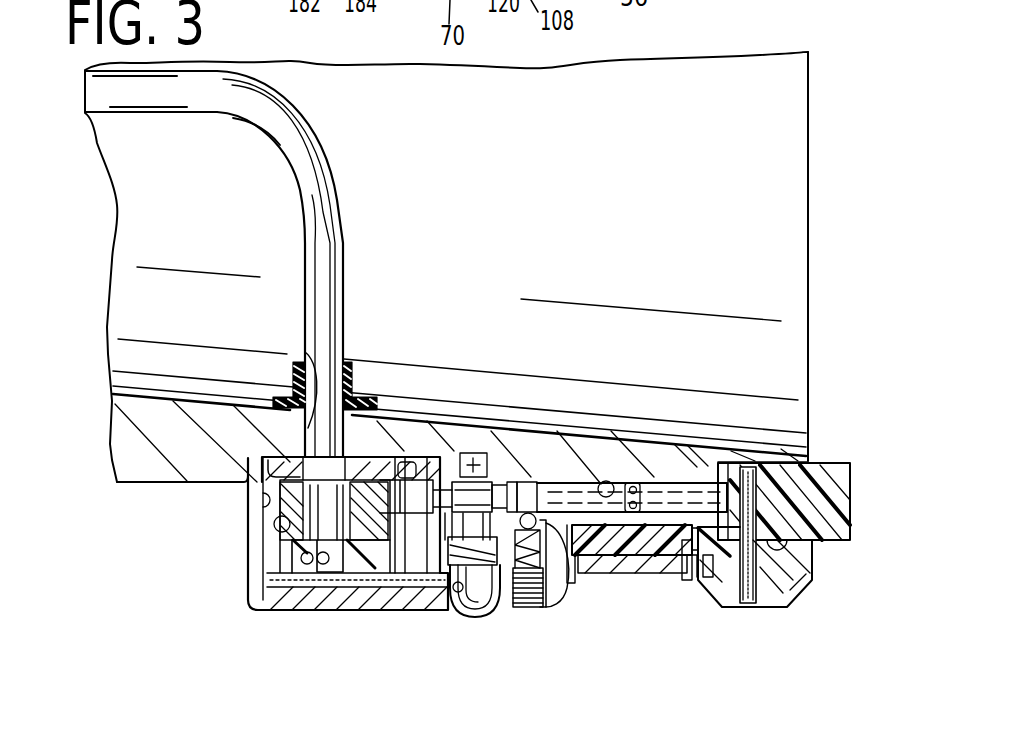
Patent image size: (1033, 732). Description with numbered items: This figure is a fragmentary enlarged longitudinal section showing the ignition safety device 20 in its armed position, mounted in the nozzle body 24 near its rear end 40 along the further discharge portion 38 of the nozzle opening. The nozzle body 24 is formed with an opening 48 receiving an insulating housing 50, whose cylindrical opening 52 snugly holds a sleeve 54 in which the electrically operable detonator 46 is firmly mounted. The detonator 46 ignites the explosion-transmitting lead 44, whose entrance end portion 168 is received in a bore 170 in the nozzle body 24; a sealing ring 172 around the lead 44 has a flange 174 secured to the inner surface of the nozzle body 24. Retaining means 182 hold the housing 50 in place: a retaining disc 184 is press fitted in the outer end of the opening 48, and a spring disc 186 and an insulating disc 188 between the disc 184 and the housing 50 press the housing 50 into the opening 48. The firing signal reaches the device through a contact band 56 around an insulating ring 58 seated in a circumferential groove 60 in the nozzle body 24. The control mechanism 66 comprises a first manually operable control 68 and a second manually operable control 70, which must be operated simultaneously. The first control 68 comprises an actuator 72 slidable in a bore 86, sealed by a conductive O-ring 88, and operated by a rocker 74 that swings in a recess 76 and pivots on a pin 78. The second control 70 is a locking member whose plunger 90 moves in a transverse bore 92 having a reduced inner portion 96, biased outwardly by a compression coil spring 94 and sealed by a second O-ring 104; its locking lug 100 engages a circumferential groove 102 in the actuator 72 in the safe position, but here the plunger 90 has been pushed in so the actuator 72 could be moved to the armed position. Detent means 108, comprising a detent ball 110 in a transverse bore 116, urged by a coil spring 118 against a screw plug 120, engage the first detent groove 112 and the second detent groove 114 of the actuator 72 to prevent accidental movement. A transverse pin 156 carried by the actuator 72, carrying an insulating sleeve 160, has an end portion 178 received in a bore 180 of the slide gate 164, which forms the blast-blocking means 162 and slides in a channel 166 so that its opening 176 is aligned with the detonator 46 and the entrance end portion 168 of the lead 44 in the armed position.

The ignition safety device 20 is at (226, 580).
The nozzle body 24 is at (143, 483).
The further discharge portion 38 is at (128, 392).
The rear end 40 is at (812, 572).
The explosion-transmitting lead 44 is at (300, 120).
The detonator 46 is at (300, 560).
The opening 48 is at (270, 500).
The housing 50 is at (274, 527).
The cylindrical opening 52 is at (296, 546).
The sleeve 54 is at (262, 493).
The contact band 56 is at (617, 573).
The insulating ring 58 is at (648, 555).
The circumferential groove 60 is at (668, 562).
The control mechanism 66 is at (592, 446).
The first manually operable control 68 is at (836, 452).
The second manually operable control 70 is at (467, 625).
The actuator 72 is at (684, 458).
The rocker 74 is at (786, 474).
The recess 76 is at (783, 540).
The pin 78 is at (748, 607).
The bore 86 is at (603, 483).
The conductive O-ring 88 is at (636, 482).
The plunger 90 is at (460, 607).
The bore 92 is at (380, 587).
The compression coil spring 94 is at (472, 485).
The reduced inner portion 96 is at (462, 453).
The locking lug 100 is at (466, 540).
The circumferential groove 102 is at (444, 456).
The second O-ring 104 is at (502, 587).
The detent means 108 is at (530, 626).
The detent ball 110 is at (550, 556).
The first detent groove 112 is at (517, 484).
The second detent groove 114 is at (528, 481).
The transverse bore 116 is at (543, 602).
The coil spring 118 is at (549, 593).
The screw plug 120 is at (523, 603).
The transverse pin 156 is at (388, 587).
The insulating sleeve 160 is at (347, 603).
The blast-blocking means 162 is at (228, 466).
The slide gate 164 is at (262, 458).
The channel 166 is at (258, 455).
The entrance end portion 168 is at (270, 406).
The bore 170 is at (301, 362).
The sealing ring 172 is at (292, 365).
The flange 174 is at (356, 366).
The opening 176 is at (325, 462).
The end portion 178 is at (404, 455).
The bore 180 is at (421, 456).
The retaining means 182 is at (292, 622).
The retaining disc 184 is at (325, 602).
The spring disc 186 is at (287, 607).
The insulating disc 188 is at (247, 613).